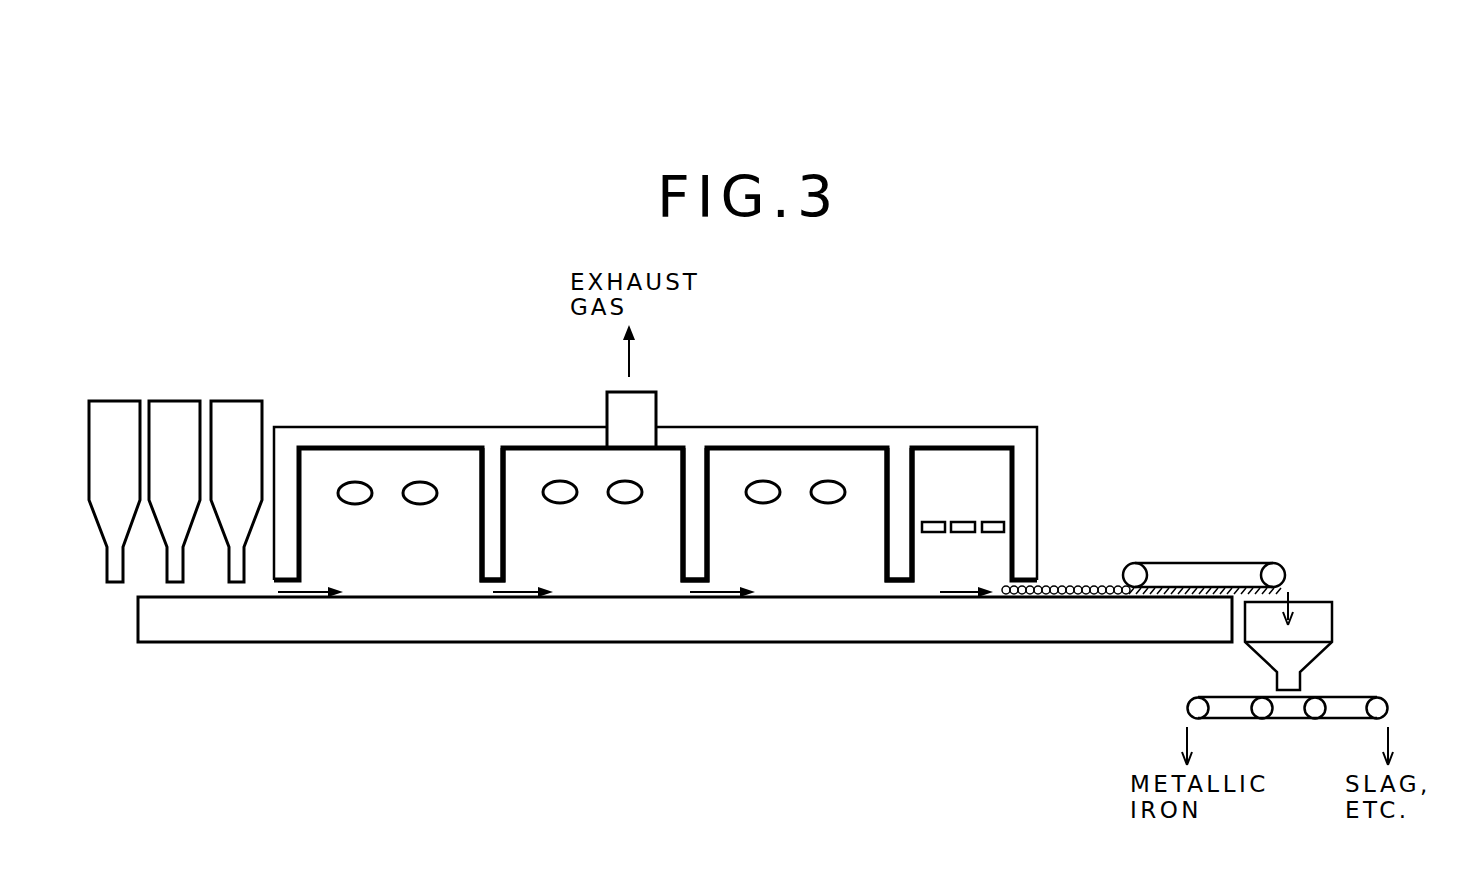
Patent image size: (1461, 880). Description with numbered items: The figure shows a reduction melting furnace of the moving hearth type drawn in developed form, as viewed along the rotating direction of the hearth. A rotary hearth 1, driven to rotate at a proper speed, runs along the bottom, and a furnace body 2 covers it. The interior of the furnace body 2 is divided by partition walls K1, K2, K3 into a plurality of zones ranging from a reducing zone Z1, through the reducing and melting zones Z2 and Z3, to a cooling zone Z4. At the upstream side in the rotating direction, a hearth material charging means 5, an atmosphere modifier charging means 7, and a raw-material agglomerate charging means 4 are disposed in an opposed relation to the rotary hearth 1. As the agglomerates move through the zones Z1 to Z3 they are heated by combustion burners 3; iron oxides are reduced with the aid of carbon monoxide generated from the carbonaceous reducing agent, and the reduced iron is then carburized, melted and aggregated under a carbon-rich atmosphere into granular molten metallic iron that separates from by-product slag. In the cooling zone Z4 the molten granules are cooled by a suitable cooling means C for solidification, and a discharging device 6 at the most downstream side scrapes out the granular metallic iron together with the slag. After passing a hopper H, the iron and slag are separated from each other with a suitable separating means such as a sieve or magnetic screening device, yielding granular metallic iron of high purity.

The rotary hearth 1 is at (446, 628).
The furnace body 2 is at (1025, 432).
The combustion burners 3 is at (355, 500).
The raw-material agglomerate charging means 4 is at (243, 418).
The hearth material charging means 5 is at (113, 418).
The discharging device 6 is at (1198, 557).
The atmosphere modifier charging means 7 is at (179, 418).
The partition wall K1 is at (487, 456).
The partition wall K2 is at (690, 457).
The partition wall K3 is at (895, 455).
The reducing zone Z1 is at (389, 573).
The reducing and melting zone Z2 is at (620, 572).
The reducing and melting zone Z3 is at (830, 568).
The cooling zone Z4 is at (928, 562).
The cooling means C is at (990, 521).
The hopper H is at (1320, 618).